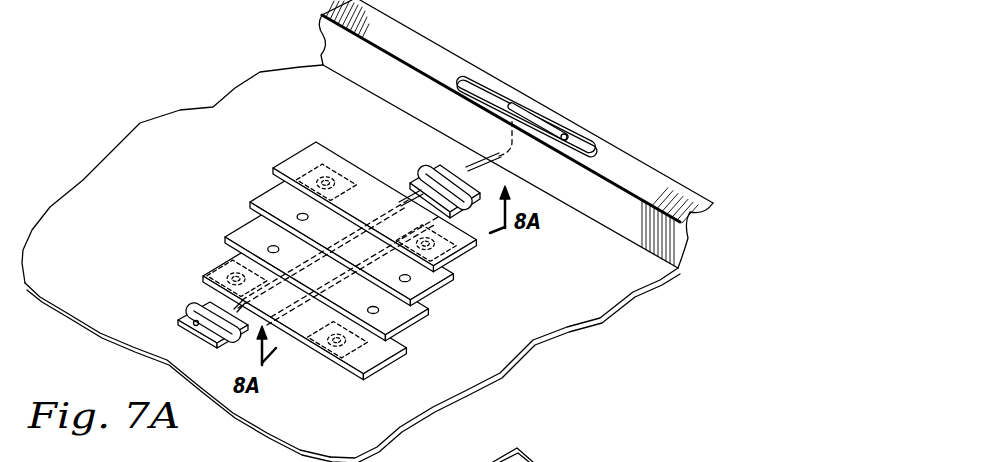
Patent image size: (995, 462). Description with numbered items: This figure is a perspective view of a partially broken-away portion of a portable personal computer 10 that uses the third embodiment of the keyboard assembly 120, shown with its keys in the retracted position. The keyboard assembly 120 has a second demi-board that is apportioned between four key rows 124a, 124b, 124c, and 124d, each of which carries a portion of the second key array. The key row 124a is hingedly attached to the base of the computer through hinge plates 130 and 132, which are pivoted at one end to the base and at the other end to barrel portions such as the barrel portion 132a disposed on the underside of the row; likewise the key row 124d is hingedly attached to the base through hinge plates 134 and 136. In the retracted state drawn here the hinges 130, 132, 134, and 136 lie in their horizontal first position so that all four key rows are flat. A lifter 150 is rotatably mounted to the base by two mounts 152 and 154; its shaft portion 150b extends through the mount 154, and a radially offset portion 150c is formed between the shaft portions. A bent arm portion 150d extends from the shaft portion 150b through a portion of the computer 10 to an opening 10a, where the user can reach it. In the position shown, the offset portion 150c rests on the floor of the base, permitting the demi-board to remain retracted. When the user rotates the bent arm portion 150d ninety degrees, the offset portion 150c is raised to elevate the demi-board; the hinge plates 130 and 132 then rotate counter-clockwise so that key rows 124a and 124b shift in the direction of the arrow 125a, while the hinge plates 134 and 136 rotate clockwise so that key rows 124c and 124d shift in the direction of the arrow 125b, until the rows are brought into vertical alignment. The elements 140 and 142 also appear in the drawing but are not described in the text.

The portable personal computer 10 is at (128, 105).
The opening 10a is at (484, 78).
The keyboard assembly 120 is at (118, 282).
The key row 124a is at (220, 253).
The key row 124b is at (241, 216).
The key row 124c is at (264, 181).
The key row 124d is at (288, 146).
The arrow 125a is at (150, 218).
The arrow 125b is at (545, 302).
The hinge plate 130 is at (230, 293).
The hinge plate 132 is at (343, 367).
The barrel portion 132a is at (376, 359).
The hinge plate 134 is at (334, 150).
The hinge plate 136 is at (466, 258).
The slat edge 140 is at (416, 333).
The slat joint 142 is at (350, 206).
The lifter 150 is at (575, 122).
The shaft portion 150b is at (488, 160).
The radially offset portion 150c is at (311, 306).
The bent arm portion 150d is at (539, 108).
The mount 152 is at (183, 304).
The mount 154 is at (422, 174).